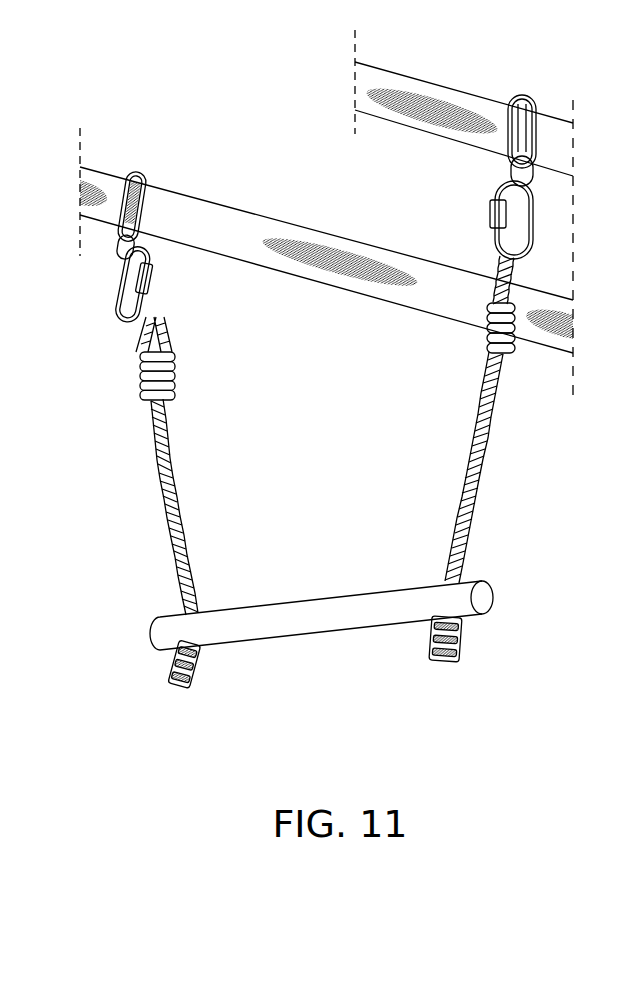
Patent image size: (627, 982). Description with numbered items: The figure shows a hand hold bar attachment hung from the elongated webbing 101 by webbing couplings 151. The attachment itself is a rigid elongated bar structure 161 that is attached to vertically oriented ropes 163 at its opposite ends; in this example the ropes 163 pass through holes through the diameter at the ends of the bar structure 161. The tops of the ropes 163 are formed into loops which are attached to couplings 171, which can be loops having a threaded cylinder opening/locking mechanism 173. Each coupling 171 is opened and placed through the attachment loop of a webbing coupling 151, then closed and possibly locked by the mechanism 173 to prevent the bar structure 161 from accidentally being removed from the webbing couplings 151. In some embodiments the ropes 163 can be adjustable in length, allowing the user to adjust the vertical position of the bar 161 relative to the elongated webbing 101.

The elongated webbing 101 is at (390, 75).
The webbing coupling 151 is at (132, 172).
The coupling 171 is at (138, 302).
The threaded cylinder opening/locking mechanism 173 is at (163, 278).
The rope 163 is at (172, 478).
The bar structure 161 is at (304, 612).